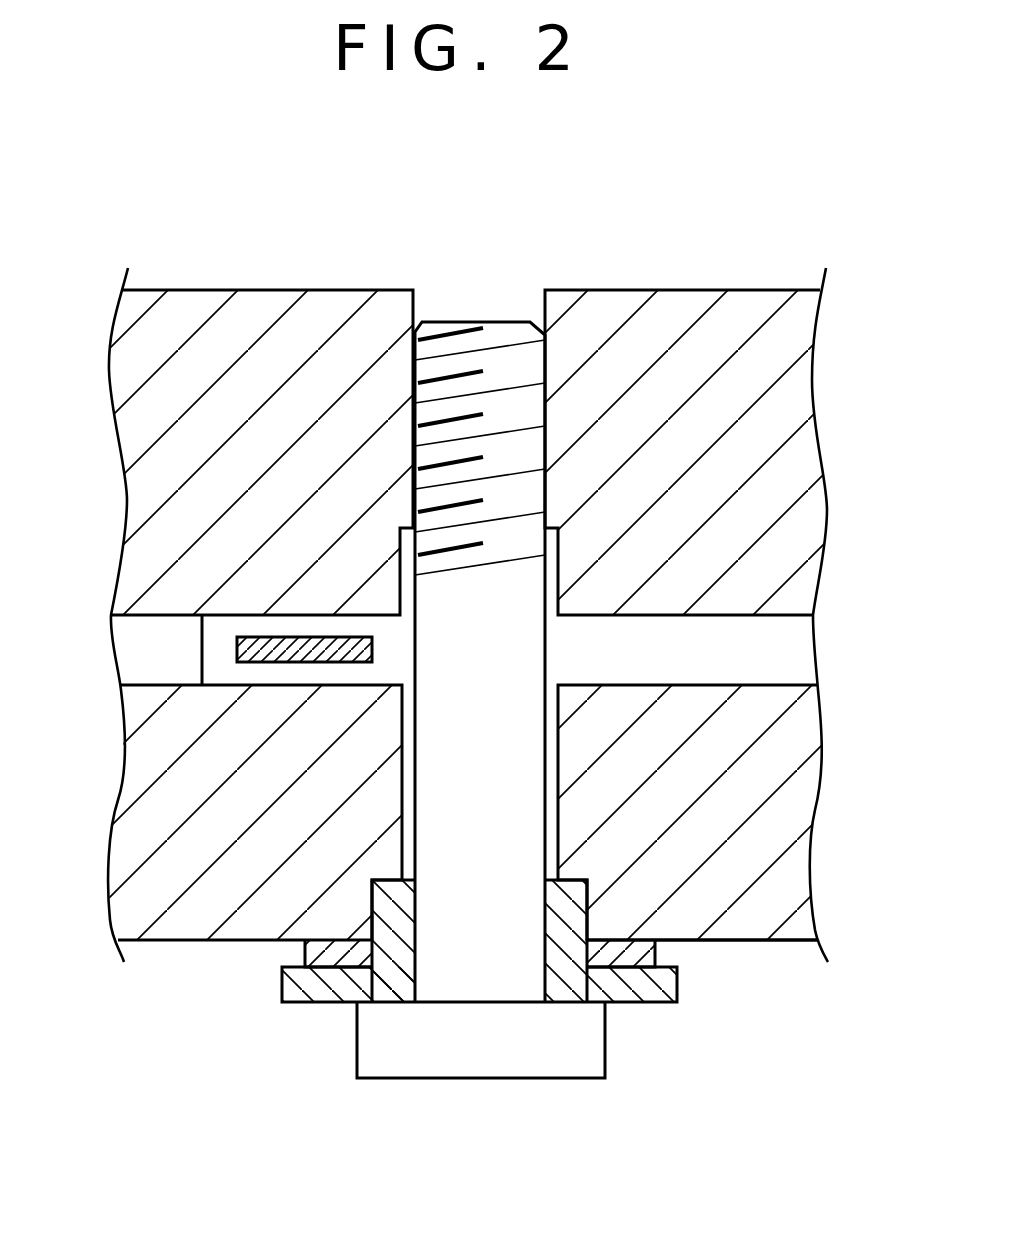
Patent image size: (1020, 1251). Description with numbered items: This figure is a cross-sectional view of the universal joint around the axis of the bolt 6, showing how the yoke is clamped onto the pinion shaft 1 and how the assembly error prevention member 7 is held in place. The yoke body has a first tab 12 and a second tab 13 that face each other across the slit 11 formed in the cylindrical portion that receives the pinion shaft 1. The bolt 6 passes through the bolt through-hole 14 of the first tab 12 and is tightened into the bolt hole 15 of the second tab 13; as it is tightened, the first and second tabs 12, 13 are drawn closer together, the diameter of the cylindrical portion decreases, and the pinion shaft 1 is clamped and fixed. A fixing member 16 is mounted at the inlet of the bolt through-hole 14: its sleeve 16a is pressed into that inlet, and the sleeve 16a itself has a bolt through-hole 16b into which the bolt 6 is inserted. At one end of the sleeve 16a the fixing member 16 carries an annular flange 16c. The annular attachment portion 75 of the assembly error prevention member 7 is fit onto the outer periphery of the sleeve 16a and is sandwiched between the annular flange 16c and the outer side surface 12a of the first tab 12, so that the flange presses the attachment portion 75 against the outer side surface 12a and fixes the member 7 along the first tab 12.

The pinion shaft 1 is at (792, 653).
The bolt 6 is at (510, 1067).
The assembly error prevention member 7 is at (637, 934).
The slit 11 is at (700, 614).
The first tab 12 is at (813, 778).
The outer side surface of the first tab 12a is at (785, 946).
The second tab 13 is at (787, 398).
The bolt through-hole 14 is at (408, 780).
The bolt hole 15 is at (545, 378).
The fixing member 16 is at (420, 1009).
The sleeve 16a is at (383, 898).
The bolt through-hole of the sleeve 16b is at (417, 957).
The annular flange 16c is at (293, 982).
The annular attachment portion 75 is at (625, 962).